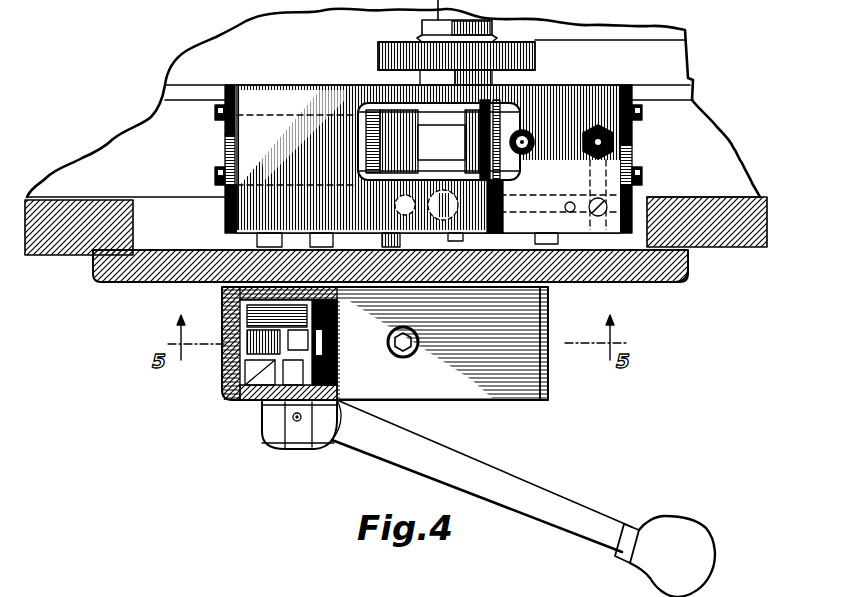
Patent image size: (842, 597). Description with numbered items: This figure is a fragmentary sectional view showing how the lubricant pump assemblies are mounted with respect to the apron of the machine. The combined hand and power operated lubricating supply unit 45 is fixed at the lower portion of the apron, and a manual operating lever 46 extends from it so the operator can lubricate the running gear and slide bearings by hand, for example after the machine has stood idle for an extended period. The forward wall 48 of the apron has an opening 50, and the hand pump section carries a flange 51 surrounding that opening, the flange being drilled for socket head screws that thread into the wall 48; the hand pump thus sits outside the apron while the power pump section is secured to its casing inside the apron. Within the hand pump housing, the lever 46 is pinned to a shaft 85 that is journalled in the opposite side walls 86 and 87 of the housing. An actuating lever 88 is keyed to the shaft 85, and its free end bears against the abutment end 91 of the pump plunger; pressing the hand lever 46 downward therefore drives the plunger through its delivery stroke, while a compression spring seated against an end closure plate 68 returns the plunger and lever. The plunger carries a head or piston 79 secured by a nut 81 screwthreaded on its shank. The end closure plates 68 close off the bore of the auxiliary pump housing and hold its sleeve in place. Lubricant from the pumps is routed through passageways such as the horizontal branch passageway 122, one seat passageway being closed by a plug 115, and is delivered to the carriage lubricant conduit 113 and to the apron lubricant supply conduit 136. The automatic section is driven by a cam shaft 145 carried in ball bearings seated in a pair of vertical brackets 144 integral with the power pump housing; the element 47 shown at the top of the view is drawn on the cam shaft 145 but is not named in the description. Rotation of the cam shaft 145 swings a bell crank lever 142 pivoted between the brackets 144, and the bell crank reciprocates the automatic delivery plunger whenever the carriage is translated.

The combined hand and power operated lubricating supply unit 45 is at (512, 404).
The manual operating lever 46 is at (568, 528).
The gear 47 is at (378, 58).
The forward wall of the apron 48 is at (722, 250).
The opening 50 is at (662, 262).
The flange 51 is at (683, 282).
The end closure plate 68 is at (242, 352).
The head or piston 79 is at (337, 358).
The nut 81 is at (340, 398).
The shaft 85 is at (284, 428).
The side wall of pump housing 86 is at (260, 405).
The side wall of pump housing 87 is at (252, 270).
The actuating lever 88 is at (243, 368).
The abutment end of plunger 91 is at (252, 390).
The carriage lubricant conduit 113 is at (614, 142).
The plug 115 is at (608, 208).
The horizontal branch passageway 122 is at (263, 214).
The apron lubricant supply conduit 136 is at (528, 130).
The bell crank lever 142 is at (378, 132).
The vertical bracket 144 is at (493, 103).
The cam shaft 145 is at (492, 128).